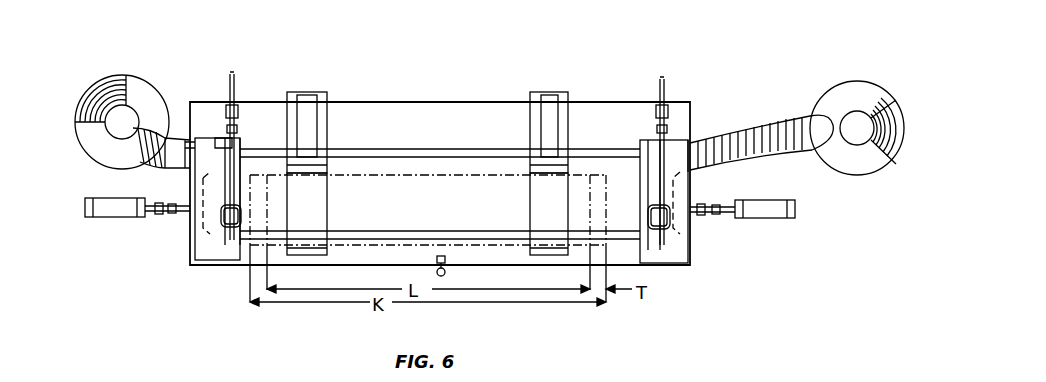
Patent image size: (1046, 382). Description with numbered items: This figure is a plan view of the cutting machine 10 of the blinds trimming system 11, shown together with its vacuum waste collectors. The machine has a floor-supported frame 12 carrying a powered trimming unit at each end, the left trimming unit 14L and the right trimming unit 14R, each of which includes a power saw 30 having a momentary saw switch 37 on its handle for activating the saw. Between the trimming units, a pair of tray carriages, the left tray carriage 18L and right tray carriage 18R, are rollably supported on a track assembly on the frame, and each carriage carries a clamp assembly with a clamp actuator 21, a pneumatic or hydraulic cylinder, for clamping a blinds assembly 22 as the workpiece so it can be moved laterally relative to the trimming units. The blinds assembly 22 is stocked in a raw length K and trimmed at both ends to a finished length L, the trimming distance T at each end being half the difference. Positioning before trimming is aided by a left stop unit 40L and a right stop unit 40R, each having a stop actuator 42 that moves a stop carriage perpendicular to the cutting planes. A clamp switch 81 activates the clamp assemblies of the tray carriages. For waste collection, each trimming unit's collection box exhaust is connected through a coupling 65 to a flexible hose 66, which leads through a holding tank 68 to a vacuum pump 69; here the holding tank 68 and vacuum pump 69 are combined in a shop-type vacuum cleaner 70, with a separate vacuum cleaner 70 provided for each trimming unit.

The cutting machine 10 is at (692, 266).
The blinds trimming system 11 is at (620, 300).
The frame 12 is at (398, 102).
The left trimming unit 14L is at (248, 96).
The right trimming unit 14R is at (648, 97).
The left tray carriage 18L is at (327, 215).
The right tray carriage 18R is at (530, 216).
The clamp actuator 21 is at (320, 135).
The blinds assembly 22 is at (380, 248).
The power saw 30 is at (224, 130).
The saw switch 37 is at (241, 220).
The left stop unit 40L is at (178, 228).
The right stop unit 40R is at (700, 232).
The stop actuator 42 is at (125, 218).
The coupling 65 is at (698, 144).
The flexible hose 66 is at (802, 124).
The holding tank 68 is at (134, 166).
The vacuum pump 69 is at (132, 131).
The vacuum cleaner 70 is at (138, 82).
The clamp switch 81 is at (446, 262).